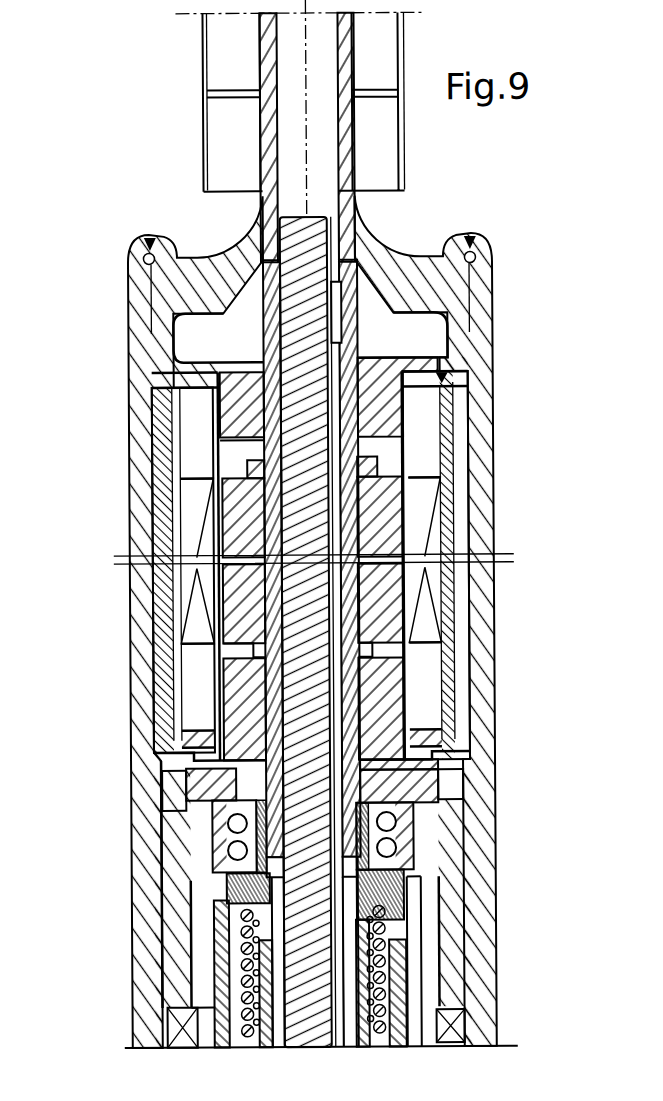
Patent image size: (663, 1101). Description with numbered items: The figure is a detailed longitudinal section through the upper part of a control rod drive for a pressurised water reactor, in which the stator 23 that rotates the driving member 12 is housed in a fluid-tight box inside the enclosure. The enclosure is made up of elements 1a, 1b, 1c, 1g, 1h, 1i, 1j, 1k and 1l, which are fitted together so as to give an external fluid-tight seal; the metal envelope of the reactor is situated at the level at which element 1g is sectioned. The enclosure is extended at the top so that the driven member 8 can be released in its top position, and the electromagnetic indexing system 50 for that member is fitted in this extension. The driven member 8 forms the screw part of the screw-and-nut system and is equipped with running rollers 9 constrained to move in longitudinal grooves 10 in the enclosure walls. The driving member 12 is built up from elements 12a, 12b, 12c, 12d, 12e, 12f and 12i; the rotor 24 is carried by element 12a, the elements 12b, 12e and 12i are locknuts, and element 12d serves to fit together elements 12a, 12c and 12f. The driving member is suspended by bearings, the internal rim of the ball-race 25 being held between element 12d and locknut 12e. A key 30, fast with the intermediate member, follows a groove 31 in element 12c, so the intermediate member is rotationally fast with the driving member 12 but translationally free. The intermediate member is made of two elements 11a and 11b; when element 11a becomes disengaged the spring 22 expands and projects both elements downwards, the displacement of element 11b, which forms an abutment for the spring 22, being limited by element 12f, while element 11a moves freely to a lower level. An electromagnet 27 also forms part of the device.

The electromagnetic indexing system 50 is at (233, 141).
The enclosure element 1a is at (208, 262).
The longitudinal grooves 10 is at (332, 245).
The running rollers 9 is at (341, 313).
The enclosure element 1g is at (230, 370).
The enclosure element 1h is at (175, 383).
The enclosure element 1b is at (148, 405).
The enclosure element 1j is at (172, 434).
The enclosure element 1i is at (214, 463).
The driving member 12 is at (261, 516).
The driving member element 12a is at (356, 418).
The locknut 12b is at (375, 468).
The rotor 24 is at (236, 606).
The stator 23 is at (184, 631).
The driven member 8 is at (313, 610).
The enclosure element 1l is at (236, 710).
The enclosure element 1k is at (176, 743).
The locknut 12i is at (220, 790).
The locknut 12e is at (385, 795).
The ball-race 25 is at (222, 822).
The enclosure element 1c is at (155, 890).
The driving member element 12d is at (220, 902).
The driving member element 12c is at (405, 905).
The intermediate member element 11b is at (210, 968).
The groove 31 is at (400, 940).
The key 30 is at (355, 980).
The intermediate member element 11a is at (193, 1012).
The spring 22 is at (405, 1007).
The electromagnet 27 is at (460, 1030).
The driving member element 12f is at (212, 1030).